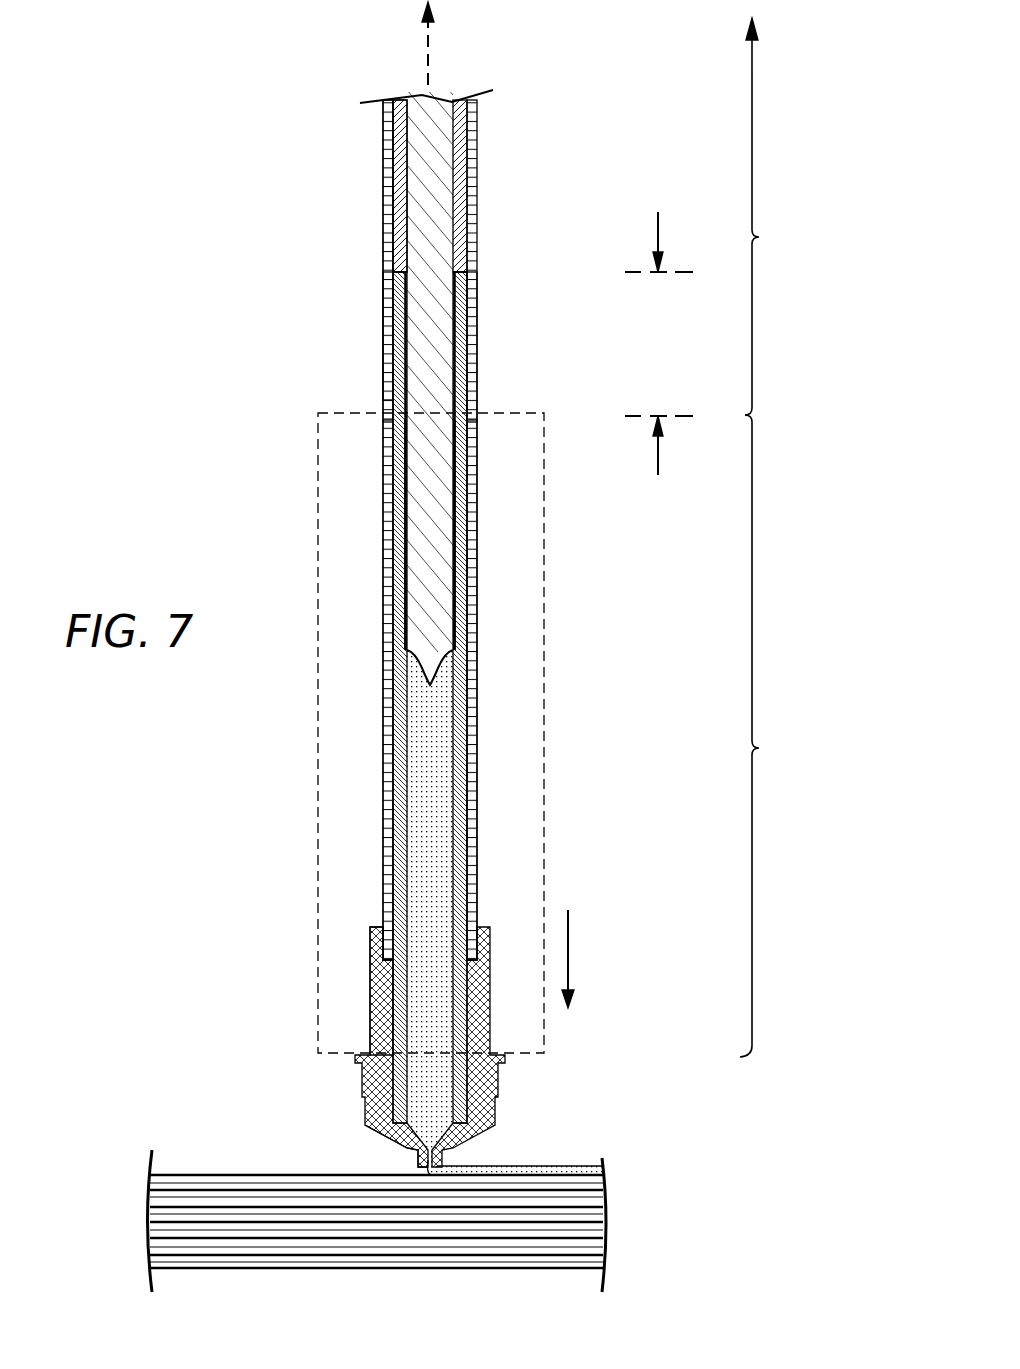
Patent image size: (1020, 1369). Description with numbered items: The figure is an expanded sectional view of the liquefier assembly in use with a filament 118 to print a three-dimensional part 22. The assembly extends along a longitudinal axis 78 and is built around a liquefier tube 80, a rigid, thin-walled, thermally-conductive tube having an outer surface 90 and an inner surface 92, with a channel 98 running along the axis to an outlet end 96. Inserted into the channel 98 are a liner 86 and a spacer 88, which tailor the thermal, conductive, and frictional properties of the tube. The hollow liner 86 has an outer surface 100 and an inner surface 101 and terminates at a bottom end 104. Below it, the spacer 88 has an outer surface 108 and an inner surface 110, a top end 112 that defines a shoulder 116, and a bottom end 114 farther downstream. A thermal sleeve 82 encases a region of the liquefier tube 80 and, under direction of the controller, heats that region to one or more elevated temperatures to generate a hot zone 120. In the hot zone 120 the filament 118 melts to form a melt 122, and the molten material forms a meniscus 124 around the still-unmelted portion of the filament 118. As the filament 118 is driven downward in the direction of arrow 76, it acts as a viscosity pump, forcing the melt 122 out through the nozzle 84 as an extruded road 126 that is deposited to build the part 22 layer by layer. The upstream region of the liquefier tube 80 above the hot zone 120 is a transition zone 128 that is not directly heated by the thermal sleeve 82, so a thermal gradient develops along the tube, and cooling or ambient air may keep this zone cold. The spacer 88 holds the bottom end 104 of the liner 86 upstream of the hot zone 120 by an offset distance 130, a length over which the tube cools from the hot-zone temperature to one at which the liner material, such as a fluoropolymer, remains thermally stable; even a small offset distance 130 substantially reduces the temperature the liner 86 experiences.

The 3D part 22 is at (190, 1152).
The arrow 76 is at (572, 958).
The longitudinal axis 78 is at (427, 50).
The liquefier tube 80 is at (382, 386).
The thermal sleeve 82 is at (316, 838).
The nozzle 84 is at (490, 1075).
The liner 86 is at (469, 158).
The spacer 88 is at (478, 503).
The outer surface 90 is at (385, 298).
The inner surface 92 is at (404, 352).
The outlet end 96 is at (372, 968).
The channel 98 is at (462, 723).
The outer surface 100 is at (388, 166).
The inner surface 101 is at (403, 214).
The bottom end 104 is at (384, 268).
The outer surface 108 is at (392, 502).
The inner surface 110 is at (422, 550).
The top end 112 is at (477, 284).
The bottom end 114 is at (370, 1128).
The shoulder 116 is at (466, 266).
The filament 118 is at (442, 358).
The hot zone 120 is at (775, 736).
The melt 122 is at (442, 855).
The meniscus 124 is at (446, 683).
The extruded road 126 is at (560, 1165).
The transition zone 128 is at (716, 216).
The offset distance 130 is at (657, 450).